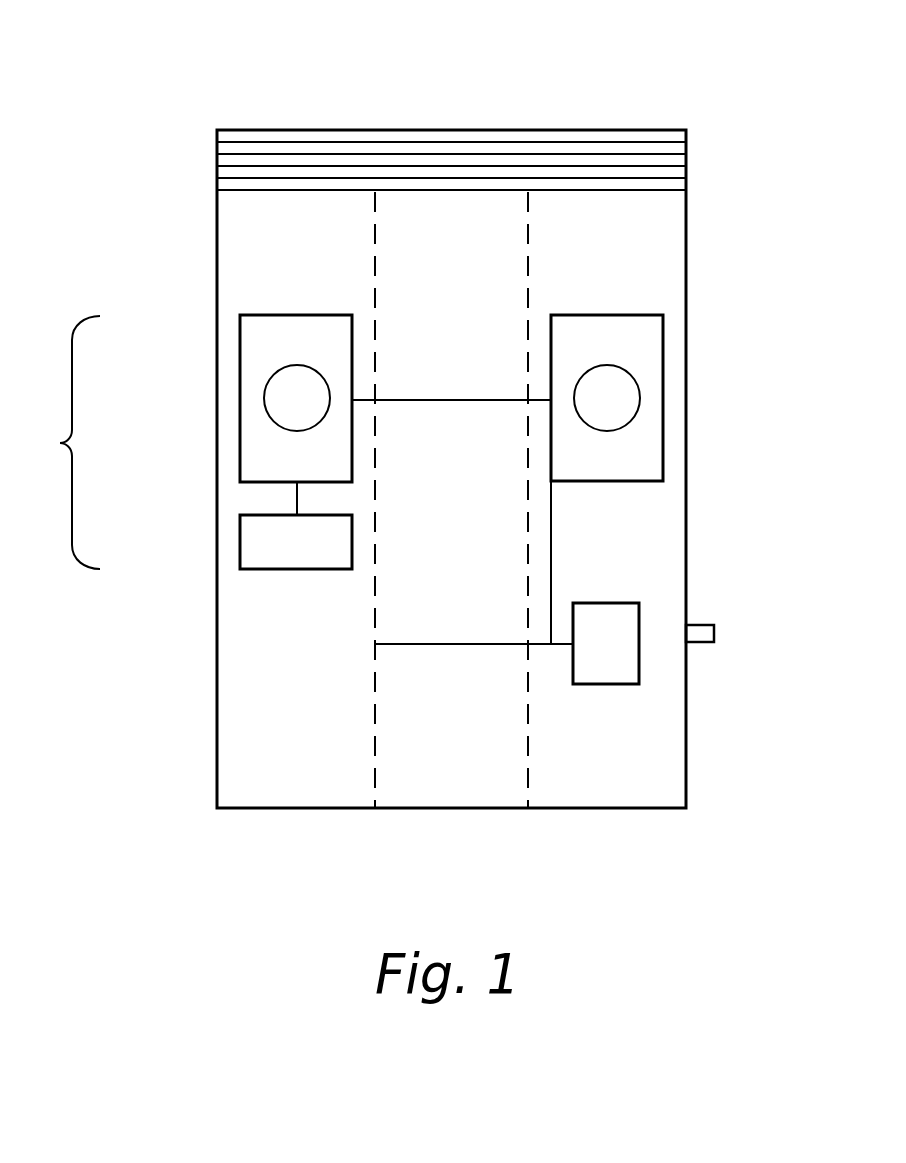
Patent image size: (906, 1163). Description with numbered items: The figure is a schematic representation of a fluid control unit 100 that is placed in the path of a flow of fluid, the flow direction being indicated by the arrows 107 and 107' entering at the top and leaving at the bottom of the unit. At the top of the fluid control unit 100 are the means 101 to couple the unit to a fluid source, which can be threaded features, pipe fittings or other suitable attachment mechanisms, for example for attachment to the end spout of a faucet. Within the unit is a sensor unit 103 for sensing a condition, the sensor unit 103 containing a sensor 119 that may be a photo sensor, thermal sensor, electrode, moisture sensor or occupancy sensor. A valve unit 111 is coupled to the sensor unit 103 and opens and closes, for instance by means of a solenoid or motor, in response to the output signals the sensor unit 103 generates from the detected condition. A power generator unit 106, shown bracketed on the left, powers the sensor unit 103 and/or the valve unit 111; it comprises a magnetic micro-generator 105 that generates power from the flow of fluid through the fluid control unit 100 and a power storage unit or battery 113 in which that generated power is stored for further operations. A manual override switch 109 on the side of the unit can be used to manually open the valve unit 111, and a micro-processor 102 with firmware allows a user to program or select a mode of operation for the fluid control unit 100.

The fluid control unit 100 is at (196, 95).
The means to couple the fluid control unit to a fluid source 101 is at (686, 158).
The micro-processor 102 is at (639, 665).
The sensor unit 103 is at (663, 398).
The magnetic micro-generator 105 is at (240, 408).
The power generator unit 106 is at (51, 442).
The arrow indicating flow of fluid 107 is at (456, 422).
The arrow indicating flow of fluid 107' is at (492, 881).
The manual override switch 109 is at (714, 633).
The valve unit 111 is at (450, 647).
The power storage unit or battery 113 is at (240, 545).
The sensor 119 is at (602, 366).